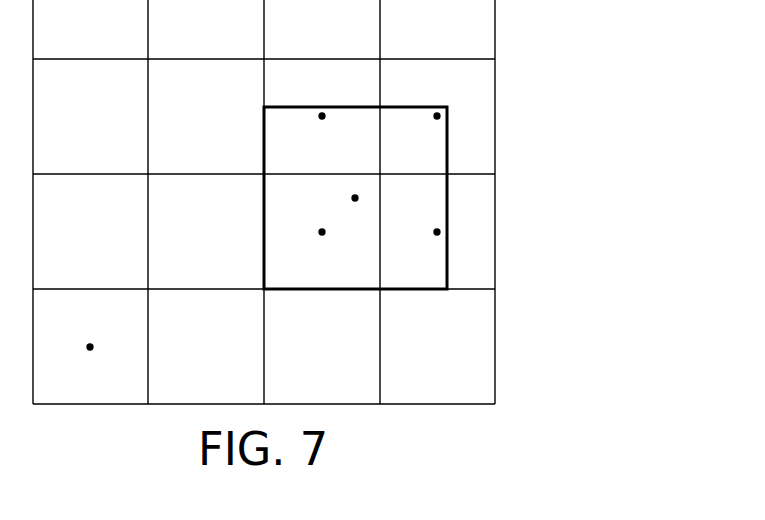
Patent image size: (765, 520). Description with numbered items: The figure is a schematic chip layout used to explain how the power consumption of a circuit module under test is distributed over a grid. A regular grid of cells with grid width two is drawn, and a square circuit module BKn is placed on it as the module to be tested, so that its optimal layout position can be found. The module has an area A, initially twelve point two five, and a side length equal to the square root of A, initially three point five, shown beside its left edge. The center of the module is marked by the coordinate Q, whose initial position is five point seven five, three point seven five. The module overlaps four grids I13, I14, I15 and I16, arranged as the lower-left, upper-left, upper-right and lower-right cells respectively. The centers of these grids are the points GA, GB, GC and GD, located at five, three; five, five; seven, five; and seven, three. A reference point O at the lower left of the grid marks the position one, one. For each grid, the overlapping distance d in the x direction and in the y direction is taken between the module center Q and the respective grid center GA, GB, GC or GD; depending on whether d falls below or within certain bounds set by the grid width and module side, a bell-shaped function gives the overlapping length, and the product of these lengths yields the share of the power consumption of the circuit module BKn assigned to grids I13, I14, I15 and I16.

The circuit module BKn is at (355, 107).
The grid center GB is at (322, 118).
The grid center GC is at (440, 115).
The grid center GD is at (440, 230).
The grid center GA is at (322, 234).
The center coordinate Q is at (356, 201).
The origin O (1,1) O is at (90, 363).
The grid I13 is at (264, 289).
The grid I14 is at (263, 107).
The grid I15 is at (397, 154).
The grid I16 is at (401, 195).
The area A is at (257, 187).